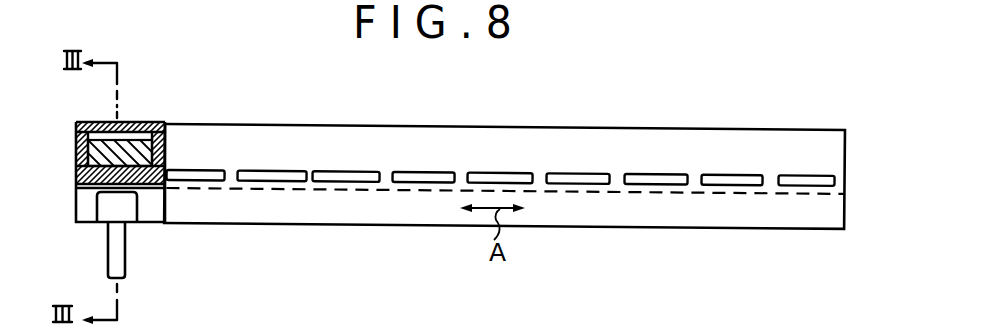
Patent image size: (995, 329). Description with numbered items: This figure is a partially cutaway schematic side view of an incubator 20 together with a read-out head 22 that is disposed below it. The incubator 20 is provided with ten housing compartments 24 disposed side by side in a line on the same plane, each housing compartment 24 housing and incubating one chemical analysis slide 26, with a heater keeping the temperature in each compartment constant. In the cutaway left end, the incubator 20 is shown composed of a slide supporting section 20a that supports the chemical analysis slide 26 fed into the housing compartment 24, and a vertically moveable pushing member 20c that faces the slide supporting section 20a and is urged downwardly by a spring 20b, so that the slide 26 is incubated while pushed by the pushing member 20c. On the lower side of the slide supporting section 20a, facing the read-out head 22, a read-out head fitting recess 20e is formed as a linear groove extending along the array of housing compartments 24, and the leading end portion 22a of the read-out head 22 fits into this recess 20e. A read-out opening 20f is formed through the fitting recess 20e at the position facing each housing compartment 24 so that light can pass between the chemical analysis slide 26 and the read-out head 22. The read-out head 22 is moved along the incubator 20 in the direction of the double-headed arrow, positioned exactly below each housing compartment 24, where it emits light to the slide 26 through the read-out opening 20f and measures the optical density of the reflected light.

The incubator 20 is at (318, 116).
The slide supporting section 20a is at (78, 178).
The spring 20b is at (107, 121).
The pushing member 20c is at (123, 135).
The read-out head fitting recess 20e is at (163, 212).
The read-out opening 20f is at (110, 194).
The read-out head 22 is at (134, 252).
The leading end portion 22a is at (110, 213).
The housing compartment 24 is at (258, 170).
The chemical analysis slide 26 is at (92, 152).